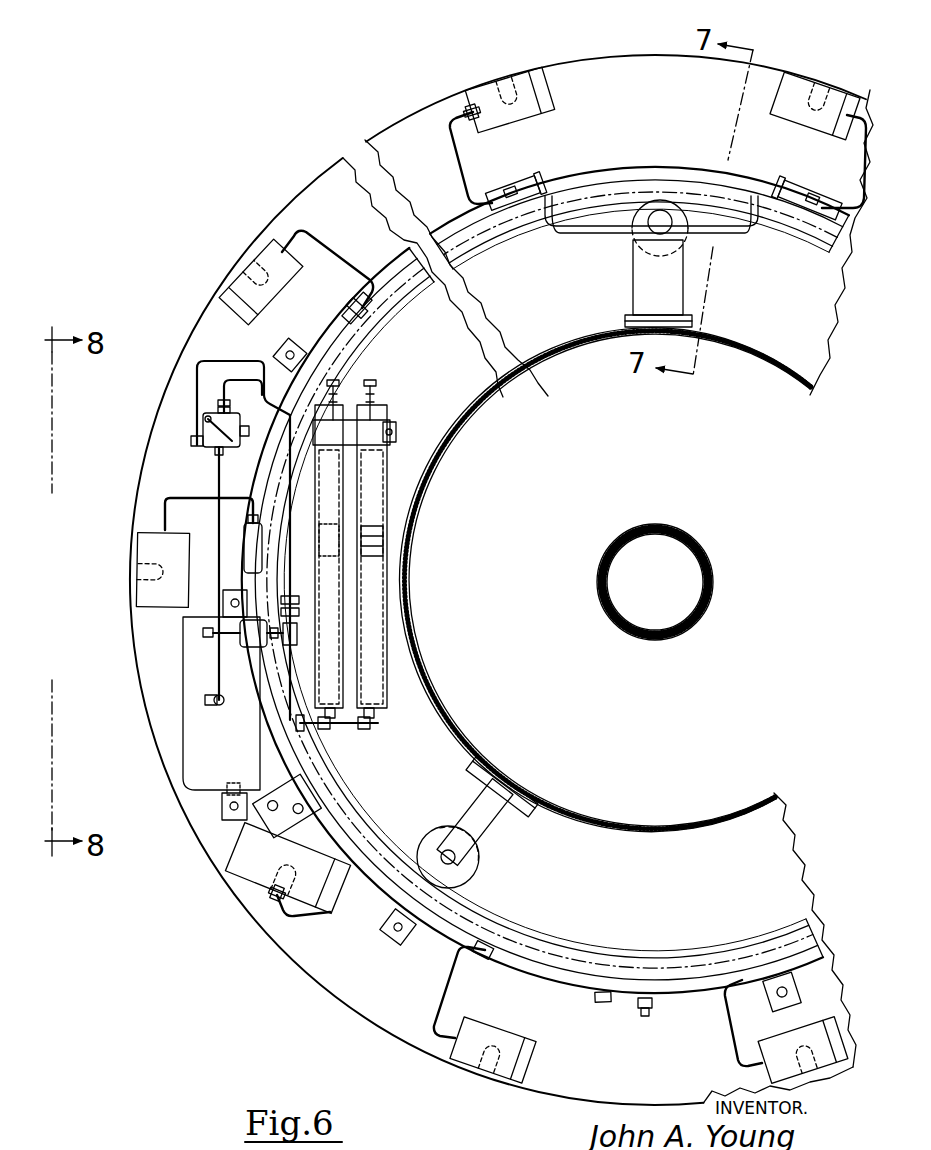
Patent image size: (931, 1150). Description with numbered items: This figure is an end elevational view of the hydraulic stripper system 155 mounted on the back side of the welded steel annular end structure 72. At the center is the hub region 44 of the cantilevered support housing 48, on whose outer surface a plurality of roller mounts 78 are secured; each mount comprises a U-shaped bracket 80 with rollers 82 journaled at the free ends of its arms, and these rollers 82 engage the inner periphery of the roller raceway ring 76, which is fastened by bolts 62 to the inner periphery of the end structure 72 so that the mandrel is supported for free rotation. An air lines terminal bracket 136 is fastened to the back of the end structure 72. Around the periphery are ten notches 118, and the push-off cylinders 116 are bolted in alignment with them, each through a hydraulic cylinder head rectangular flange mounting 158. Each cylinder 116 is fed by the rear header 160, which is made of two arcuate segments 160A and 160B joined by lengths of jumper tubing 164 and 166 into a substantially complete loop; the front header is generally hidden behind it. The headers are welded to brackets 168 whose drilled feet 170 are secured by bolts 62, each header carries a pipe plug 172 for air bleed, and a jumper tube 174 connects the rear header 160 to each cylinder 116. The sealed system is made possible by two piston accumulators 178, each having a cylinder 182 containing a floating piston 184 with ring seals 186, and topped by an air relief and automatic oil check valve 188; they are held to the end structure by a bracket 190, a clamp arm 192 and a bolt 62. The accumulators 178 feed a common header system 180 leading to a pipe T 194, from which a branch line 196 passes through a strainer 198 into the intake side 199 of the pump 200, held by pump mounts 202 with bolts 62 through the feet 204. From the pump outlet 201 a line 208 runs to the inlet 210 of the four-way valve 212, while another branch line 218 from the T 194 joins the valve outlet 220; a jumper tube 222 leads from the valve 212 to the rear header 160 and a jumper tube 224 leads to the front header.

The shaft 44 is at (686, 526).
The support housing 48 is at (754, 337).
The bolts 62 is at (284, 353).
The end structure 72 is at (322, 173).
The roller raceway ring 76 is at (518, 943).
The roller mounts 78 is at (483, 856).
The U-shaped brackets 80 is at (476, 797).
The rollers 82 is at (443, 838).
The push-off cylinders 116 is at (512, 76).
The notches 118 is at (478, 82).
The air lines terminal bracket 136 is at (302, 800).
The hydraulic stripper system 155 is at (320, 128).
The hydraulic cylinder head rectangular flange mounting 158 is at (458, 108).
The rear header 160 is at (456, 203).
The header segment 160A is at (506, 188).
The header segment 160B is at (790, 186).
The jumper tubing 164 is at (633, 246).
The jumper tubing 166 is at (572, 232).
The brackets 168 is at (322, 312).
The feet 170 is at (396, 940).
The pipe plug 172 is at (651, 1010).
The jumper tube 174 is at (453, 143).
The piston accumulators 178 is at (345, 576).
The common header system 180 is at (346, 733).
The cylinder 182 is at (388, 600).
The floating piston 184 is at (385, 549).
The ring seals 186 is at (385, 531).
The air relief and automatic oil check valve 188 is at (342, 378).
The bracket 190 is at (392, 440).
The clamp arm 192 is at (392, 426).
The pipe T 194 is at (298, 633).
The branch line 196 is at (284, 643).
The strainer 198 is at (240, 631).
The intake side 199 is at (206, 629).
The pump 200 is at (186, 681).
The outlet 201 is at (205, 702).
The pump mounts 202 is at (220, 800).
The feet 204 is at (232, 604).
The line 208 is at (246, 540).
The inlet 210 is at (207, 453).
The four-way valve 212 is at (203, 436).
The branch line 218 is at (203, 410).
The outlet 220 is at (210, 407).
The jumper tube 222 is at (219, 468).
The jumper tube 224 is at (200, 362).